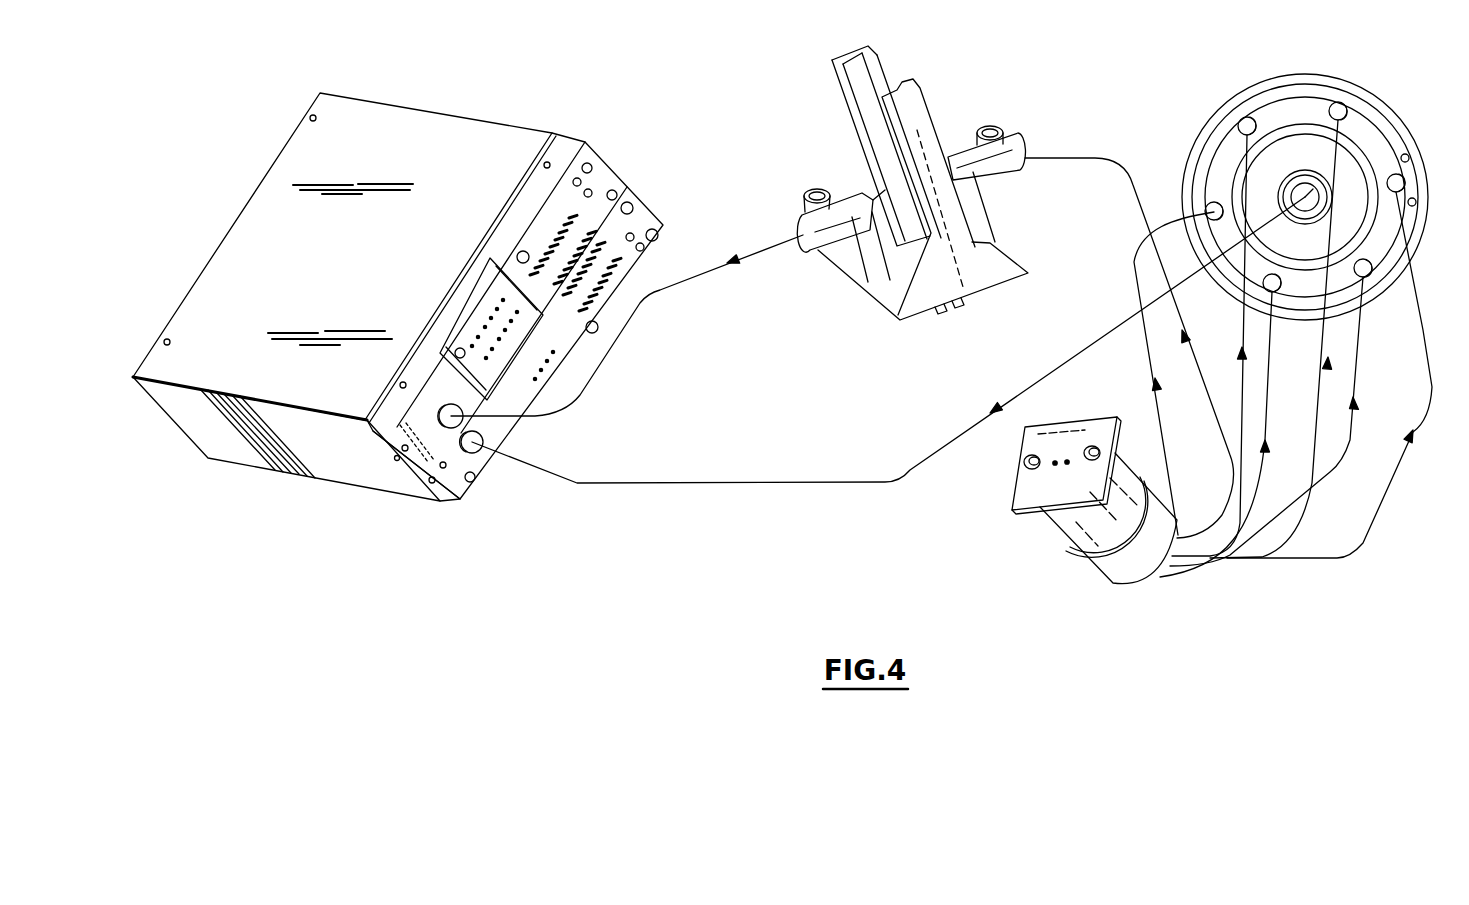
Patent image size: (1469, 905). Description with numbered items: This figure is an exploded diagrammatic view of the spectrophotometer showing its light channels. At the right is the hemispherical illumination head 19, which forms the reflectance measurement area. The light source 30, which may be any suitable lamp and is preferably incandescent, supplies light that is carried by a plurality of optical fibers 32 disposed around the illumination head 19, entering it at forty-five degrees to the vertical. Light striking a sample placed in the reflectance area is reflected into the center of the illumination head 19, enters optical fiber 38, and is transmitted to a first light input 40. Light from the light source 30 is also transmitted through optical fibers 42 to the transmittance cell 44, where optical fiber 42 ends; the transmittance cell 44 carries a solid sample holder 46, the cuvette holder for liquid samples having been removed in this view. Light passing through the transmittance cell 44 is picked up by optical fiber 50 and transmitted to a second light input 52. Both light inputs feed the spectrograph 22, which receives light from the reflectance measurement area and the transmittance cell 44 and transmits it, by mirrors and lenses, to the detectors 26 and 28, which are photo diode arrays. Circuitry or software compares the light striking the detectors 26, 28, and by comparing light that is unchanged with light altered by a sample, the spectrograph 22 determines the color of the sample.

The illumination head 19 is at (1376, 93).
The spectrograph 22 is at (368, 112).
The detector 26 is at (602, 170).
The detector 28 is at (647, 212).
The light source 30 is at (1083, 573).
The optical fibers 32 is at (1367, 538).
The optical fiber 38 is at (876, 485).
The first light input 40 is at (482, 460).
The optical fibers 42 is at (1063, 157).
The transmittance cell 44 is at (885, 57).
The solid sample holder 46 is at (852, 58).
The optical fiber 50 is at (710, 267).
The second light input 52 is at (437, 432).